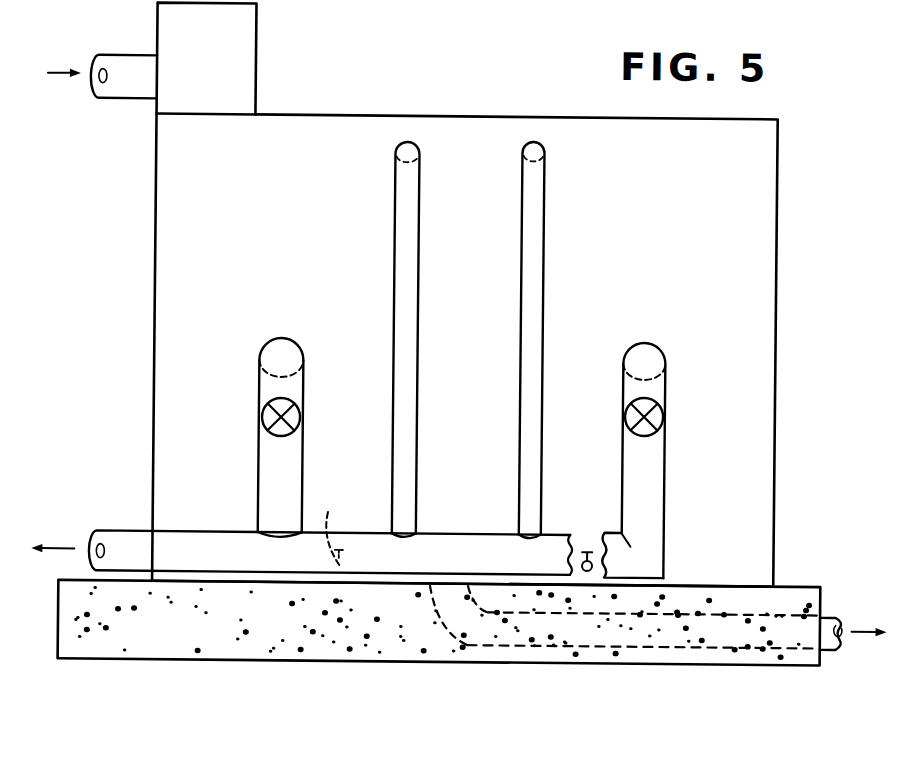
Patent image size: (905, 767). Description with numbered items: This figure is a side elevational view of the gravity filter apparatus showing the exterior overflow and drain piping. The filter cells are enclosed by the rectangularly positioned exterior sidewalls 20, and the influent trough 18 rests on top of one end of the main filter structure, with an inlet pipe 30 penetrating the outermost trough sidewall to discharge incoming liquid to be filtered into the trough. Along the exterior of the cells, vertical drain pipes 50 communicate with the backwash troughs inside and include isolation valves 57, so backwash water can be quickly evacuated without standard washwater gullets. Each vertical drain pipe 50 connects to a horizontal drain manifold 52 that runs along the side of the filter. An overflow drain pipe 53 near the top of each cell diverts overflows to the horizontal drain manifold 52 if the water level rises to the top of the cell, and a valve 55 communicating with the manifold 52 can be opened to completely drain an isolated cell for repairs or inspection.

The influent trough 18 is at (247, 52).
The exterior sidewalls 20 is at (166, 243).
The inlet pipe 30 is at (109, 62).
The vertical drain pipes 50 is at (288, 354).
The horizontal drain manifold 52 is at (110, 543).
The overflow drain pipe 53 is at (395, 198).
The valve 55 is at (584, 564).
The isolation valves 57 is at (262, 420).